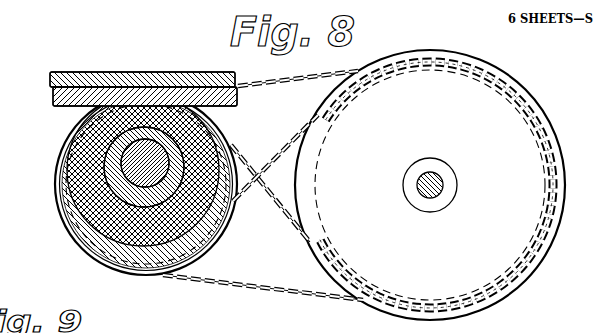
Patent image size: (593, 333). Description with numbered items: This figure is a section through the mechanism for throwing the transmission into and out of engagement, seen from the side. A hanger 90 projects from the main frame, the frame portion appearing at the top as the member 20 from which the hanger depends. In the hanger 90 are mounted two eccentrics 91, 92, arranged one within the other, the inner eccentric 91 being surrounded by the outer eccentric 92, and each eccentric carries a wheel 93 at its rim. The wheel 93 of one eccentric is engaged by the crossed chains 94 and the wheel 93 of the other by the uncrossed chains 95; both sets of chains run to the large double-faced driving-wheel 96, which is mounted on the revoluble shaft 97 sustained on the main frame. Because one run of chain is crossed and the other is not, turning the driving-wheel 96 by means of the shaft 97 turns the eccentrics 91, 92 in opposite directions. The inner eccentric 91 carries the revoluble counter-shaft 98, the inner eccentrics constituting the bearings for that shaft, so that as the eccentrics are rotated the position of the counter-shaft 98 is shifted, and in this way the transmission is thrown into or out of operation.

The support block 20 is at (183, 58).
The hanger 90 is at (77, 192).
The inner eccentric 91 is at (133, 226).
The outer eccentric 92 is at (136, 230).
The wheel 93 is at (213, 118).
The crossed chains 94 is at (240, 201).
The uncrossed chains 95 is at (241, 283).
The double-faced driving-wheel 96 is at (430, 185).
The revoluble shaft 97 is at (444, 185).
The counter-shaft 98 is at (80, 218).